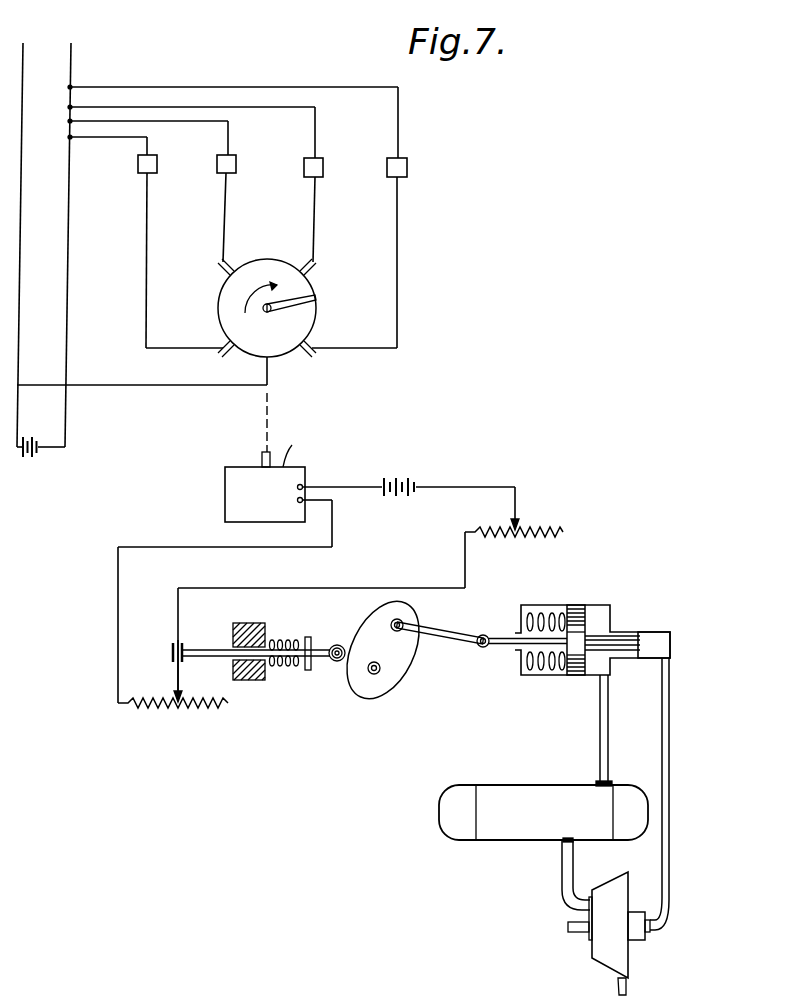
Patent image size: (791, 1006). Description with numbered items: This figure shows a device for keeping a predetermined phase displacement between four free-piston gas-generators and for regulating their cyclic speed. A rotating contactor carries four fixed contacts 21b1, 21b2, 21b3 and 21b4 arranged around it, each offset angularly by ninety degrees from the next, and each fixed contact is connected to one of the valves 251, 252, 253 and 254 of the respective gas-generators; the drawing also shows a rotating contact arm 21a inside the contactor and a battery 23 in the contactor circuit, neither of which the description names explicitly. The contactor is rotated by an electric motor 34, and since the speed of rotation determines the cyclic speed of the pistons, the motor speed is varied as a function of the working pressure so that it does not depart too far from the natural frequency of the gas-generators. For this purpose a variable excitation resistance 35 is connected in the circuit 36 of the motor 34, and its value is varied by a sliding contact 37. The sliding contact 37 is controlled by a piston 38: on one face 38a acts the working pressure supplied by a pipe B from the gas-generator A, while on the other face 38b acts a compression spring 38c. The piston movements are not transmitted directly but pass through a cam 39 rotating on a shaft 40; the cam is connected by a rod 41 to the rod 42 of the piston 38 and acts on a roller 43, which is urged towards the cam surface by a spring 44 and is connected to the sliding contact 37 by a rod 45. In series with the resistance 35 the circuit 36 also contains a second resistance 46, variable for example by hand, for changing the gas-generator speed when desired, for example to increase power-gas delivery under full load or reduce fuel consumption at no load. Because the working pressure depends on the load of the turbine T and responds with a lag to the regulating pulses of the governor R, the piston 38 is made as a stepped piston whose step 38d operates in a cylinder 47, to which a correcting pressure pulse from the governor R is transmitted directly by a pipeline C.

The valve 251 is at (151, 159).
The valve 252 is at (230, 159).
The valve 253 is at (317, 163).
The valve 254 is at (398, 163).
The rotary switch arm 21a is at (300, 302).
The fixed contact 21b1 is at (230, 352).
The fixed contact 21b2 is at (220, 260).
The fixed contact 21b3 is at (310, 256).
The fixed contact 21b4 is at (312, 349).
The battery 23 is at (22, 456).
The electric motor 34 is at (245, 482).
The circuit of the motor 36 is at (424, 486).
The second resistance 46 is at (518, 528).
The variable excitation resistance 35 is at (132, 708).
The sliding contact 37 is at (178, 673).
The rod 45 is at (210, 650).
The spring 44 is at (290, 640).
The roller 43 is at (337, 645).
The cam 39 is at (408, 652).
The shaft 40 is at (380, 673).
The rod 41 is at (462, 632).
The rod of the piston 42 is at (493, 635).
The piston 38 is at (589, 632).
The face of the piston 38a is at (585, 676).
The other face of the piston 38b is at (560, 607).
The compression spring 38c is at (538, 666).
The step of the piston 38d is at (625, 643).
The cylinder 47 is at (653, 660).
The gas-generator A is at (530, 800).
The pipe B is at (608, 736).
The pipeline C is at (666, 773).
The turbine T is at (605, 945).
The governor R is at (640, 933).